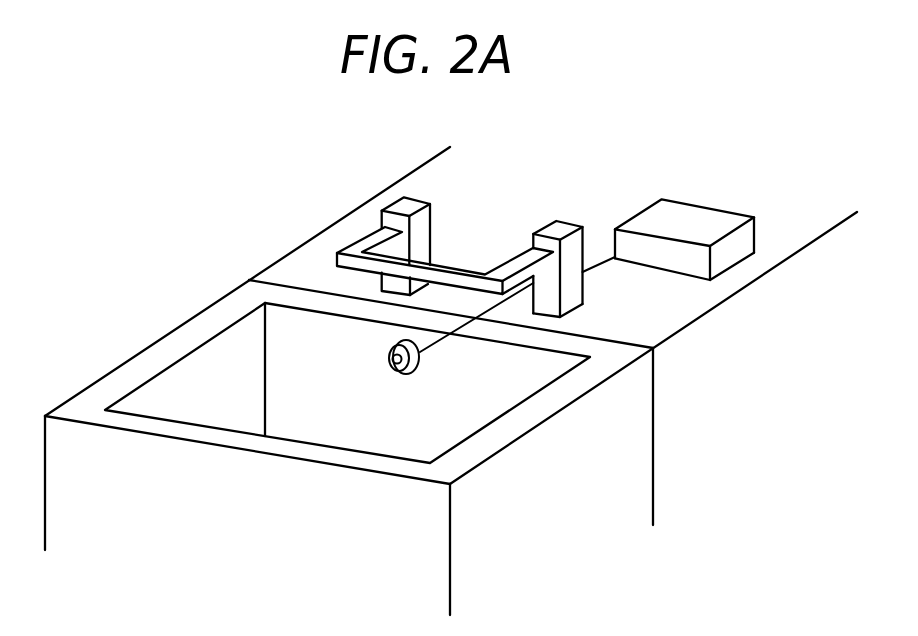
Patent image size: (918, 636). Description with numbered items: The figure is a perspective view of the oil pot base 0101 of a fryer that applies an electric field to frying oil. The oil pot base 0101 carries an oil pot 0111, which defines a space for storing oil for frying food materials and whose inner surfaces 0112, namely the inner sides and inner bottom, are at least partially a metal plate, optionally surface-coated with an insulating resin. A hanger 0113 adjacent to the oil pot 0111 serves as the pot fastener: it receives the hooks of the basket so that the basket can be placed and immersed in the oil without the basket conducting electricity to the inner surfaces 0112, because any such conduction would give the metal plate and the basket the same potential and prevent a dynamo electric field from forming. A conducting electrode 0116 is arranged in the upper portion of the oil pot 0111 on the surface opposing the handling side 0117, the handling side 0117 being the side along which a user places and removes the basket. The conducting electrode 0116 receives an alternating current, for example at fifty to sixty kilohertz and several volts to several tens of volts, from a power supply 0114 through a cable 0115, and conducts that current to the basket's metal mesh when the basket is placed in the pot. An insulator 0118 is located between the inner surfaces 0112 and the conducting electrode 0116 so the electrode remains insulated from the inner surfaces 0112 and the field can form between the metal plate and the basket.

The oil pot base 0101 is at (220, 187).
The oil pot 0111 is at (508, 427).
The inner surfaces 0112 is at (303, 342).
The hanger 0113 is at (420, 199).
The power supply 0114 is at (705, 220).
The cable 0115 is at (603, 263).
The conducting electrode 0116 is at (410, 365).
The handling side 0117 is at (260, 490).
The insulator 0118 is at (420, 358).